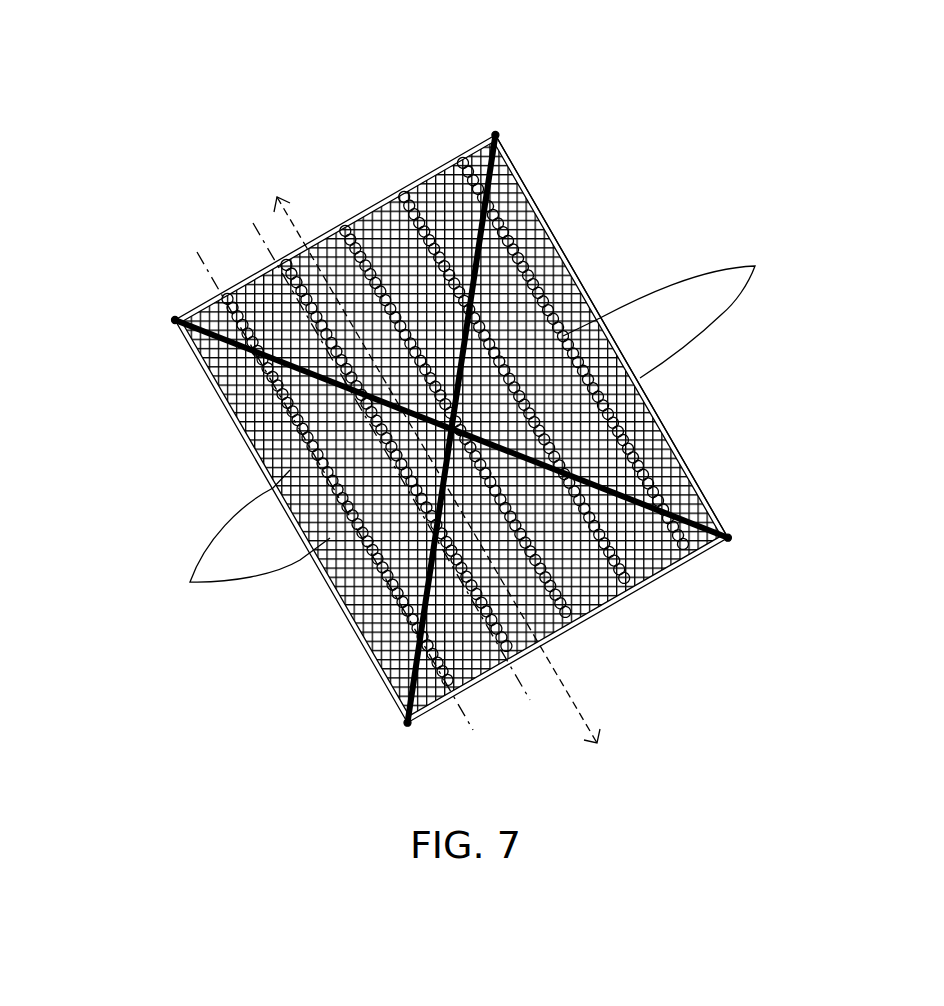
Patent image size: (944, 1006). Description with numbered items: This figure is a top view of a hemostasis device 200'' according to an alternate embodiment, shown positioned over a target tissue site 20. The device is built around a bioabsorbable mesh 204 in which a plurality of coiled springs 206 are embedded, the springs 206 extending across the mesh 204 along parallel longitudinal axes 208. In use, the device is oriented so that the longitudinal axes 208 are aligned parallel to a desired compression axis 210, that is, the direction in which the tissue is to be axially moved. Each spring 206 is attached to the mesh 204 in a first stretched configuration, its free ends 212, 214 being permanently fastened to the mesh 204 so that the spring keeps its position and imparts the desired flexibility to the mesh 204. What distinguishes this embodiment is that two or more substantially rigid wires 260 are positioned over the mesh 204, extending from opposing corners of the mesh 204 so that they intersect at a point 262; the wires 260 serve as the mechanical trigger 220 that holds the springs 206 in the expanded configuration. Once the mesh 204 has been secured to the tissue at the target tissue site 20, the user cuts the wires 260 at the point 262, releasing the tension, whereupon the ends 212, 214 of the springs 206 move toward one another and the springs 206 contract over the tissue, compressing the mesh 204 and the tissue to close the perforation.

The target tissue site 20 is at (613, 312).
The hemostasis device 200'' is at (431, 434).
The bioabsorbable mesh 204 is at (202, 372).
The springs 206 is at (498, 237).
The longitudinal axes 208 is at (346, 466).
The compression axis 210 is at (421, 457).
The free end of spring 212 is at (217, 295).
The free end of spring 214 is at (407, 723).
The mechanical trigger 220 is at (314, 154).
The wires 260 is at (722, 548).
The intersection point 262 is at (667, 429).